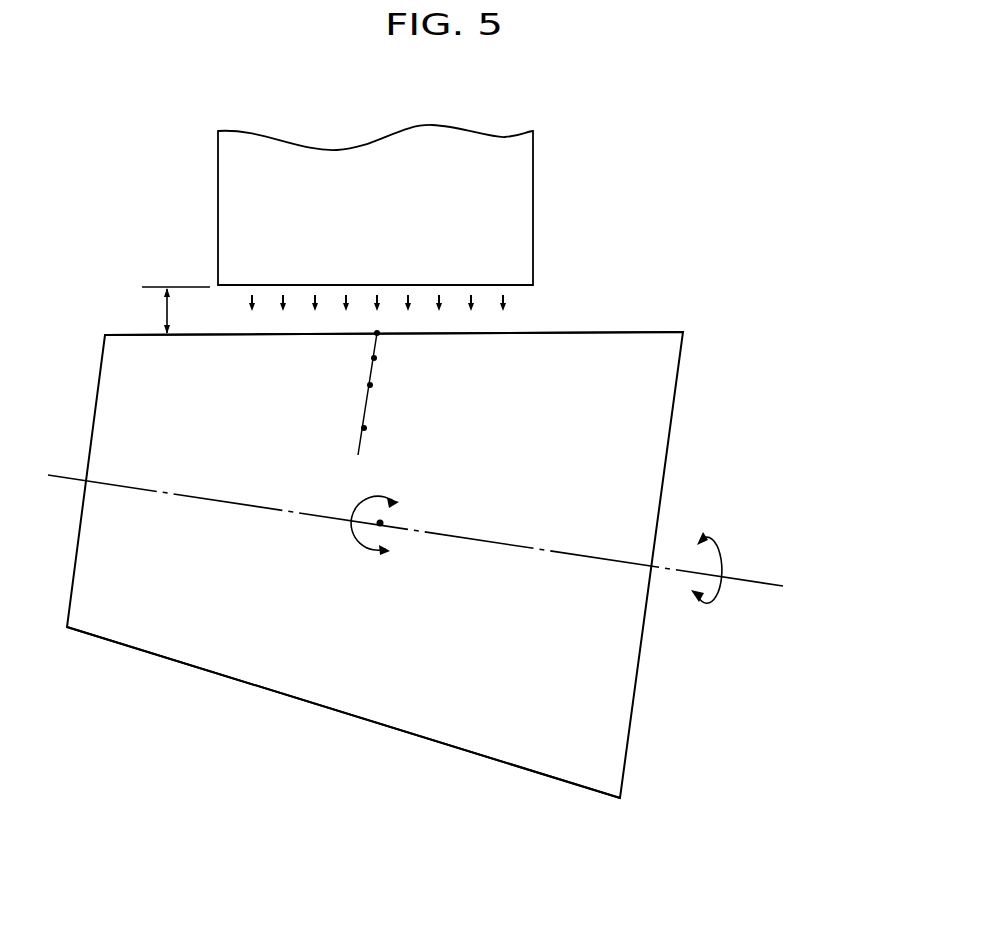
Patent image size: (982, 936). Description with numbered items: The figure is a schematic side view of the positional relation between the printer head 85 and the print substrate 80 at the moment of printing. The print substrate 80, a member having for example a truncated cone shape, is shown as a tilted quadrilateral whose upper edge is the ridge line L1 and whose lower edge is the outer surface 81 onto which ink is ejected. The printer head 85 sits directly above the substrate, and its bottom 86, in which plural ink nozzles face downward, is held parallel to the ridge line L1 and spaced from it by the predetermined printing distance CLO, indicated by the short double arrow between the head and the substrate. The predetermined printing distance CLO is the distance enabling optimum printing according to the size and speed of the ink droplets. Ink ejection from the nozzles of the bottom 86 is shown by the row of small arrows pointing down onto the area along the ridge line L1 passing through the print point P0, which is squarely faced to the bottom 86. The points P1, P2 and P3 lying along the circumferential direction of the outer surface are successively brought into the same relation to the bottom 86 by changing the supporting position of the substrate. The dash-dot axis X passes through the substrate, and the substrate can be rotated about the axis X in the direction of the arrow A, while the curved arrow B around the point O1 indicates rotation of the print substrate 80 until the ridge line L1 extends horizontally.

The printer head 85 is at (534, 172).
The bottom of the printer head 86 is at (517, 288).
The predetermined printing distance CLO is at (166, 310).
The print substrate 80 is at (672, 437).
The ridge line L1 is at (627, 332).
The outer surface 81 is at (383, 712).
The print point P0 is at (377, 333).
The point along the circumferential direction P1 is at (374, 358).
The point along the circumferential direction P2 is at (370, 385).
The point along the circumferential direction P3 is at (364, 428).
The axis X is at (755, 582).
The rotation center O1 is at (383, 522).
The arrow B is at (355, 542).
The arrow A is at (712, 598).